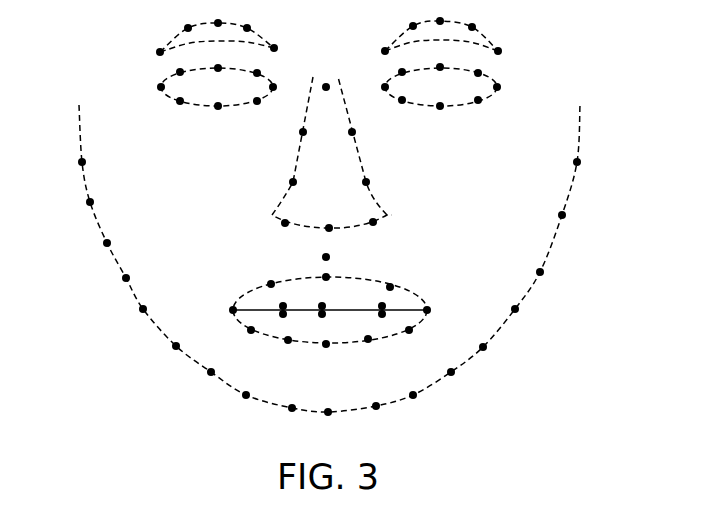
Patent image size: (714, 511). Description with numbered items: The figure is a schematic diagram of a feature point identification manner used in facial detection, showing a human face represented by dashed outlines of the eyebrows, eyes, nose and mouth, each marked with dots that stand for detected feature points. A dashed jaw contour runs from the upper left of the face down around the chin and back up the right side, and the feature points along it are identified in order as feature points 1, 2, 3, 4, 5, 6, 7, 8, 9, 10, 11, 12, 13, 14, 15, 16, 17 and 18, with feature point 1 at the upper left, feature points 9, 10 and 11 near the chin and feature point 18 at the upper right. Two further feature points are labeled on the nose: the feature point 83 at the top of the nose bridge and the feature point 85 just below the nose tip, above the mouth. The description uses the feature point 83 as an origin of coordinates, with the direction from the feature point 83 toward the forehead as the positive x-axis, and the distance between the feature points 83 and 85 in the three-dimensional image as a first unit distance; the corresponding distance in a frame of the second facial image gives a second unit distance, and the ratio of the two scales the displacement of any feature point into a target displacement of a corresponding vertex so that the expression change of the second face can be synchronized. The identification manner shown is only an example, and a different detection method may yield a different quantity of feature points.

The facial contour landmark point 1 is at (66, 163).
The facial contour landmark point 2 is at (76, 208).
The facial contour landmark point 3 is at (93, 253).
The facial contour landmark point 4 is at (113, 289).
The facial contour landmark point 5 is at (132, 321).
The facial contour landmark point 6 is at (165, 360).
The facial contour landmark point 7 is at (202, 386).
The facial contour landmark point 8 is at (243, 409).
The facial contour landmark point 9 is at (289, 422).
The facial contour landmark point 10 is at (331, 424).
The facial contour landmark point 11 is at (378, 421).
The facial contour landmark point 12 is at (425, 408).
The facial contour landmark point 13 is at (461, 383).
The facial contour landmark point 14 is at (498, 356).
The facial contour landmark point 15 is at (532, 321).
The facial contour landmark point 16 is at (558, 273).
The facial contour landmark point 17 is at (579, 218).
The facial contour landmark point 18 is at (596, 163).
The feature point 83 is at (322, 73).
The feature point 85 is at (339, 256).